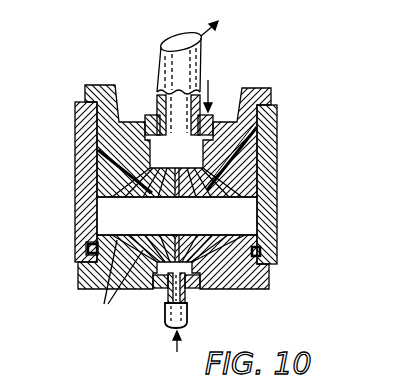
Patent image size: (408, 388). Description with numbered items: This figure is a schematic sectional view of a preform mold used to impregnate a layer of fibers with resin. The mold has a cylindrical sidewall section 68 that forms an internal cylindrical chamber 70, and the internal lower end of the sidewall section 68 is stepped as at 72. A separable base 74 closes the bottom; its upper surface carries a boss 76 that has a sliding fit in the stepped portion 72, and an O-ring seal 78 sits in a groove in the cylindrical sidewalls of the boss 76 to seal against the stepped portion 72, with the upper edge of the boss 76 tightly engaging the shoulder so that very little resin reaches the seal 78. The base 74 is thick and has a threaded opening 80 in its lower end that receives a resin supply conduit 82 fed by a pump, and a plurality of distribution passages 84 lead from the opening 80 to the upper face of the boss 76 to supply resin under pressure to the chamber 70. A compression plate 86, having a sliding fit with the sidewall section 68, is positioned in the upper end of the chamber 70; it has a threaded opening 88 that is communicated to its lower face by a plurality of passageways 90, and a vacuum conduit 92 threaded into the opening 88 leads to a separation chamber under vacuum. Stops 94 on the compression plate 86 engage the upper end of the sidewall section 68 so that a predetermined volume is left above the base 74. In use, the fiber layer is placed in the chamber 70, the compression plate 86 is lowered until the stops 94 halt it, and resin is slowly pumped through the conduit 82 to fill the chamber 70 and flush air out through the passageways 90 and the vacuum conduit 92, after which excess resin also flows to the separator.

The cylindrical sidewall section 68 is at (78, 165).
The internal cylindrical chamber 70 is at (188, 231).
The stepped portion 72 is at (91, 243).
The separable base 74 is at (78, 274).
The boss 76 is at (88, 248).
The O-ring seal 78 is at (259, 252).
The threaded opening 80 is at (152, 295).
The resin supply conduit 82 is at (162, 306).
The distribution passages 84 is at (104, 304).
The compression plate 86 is at (78, 125).
The threaded opening 88 is at (152, 117).
The passageways 90 is at (98, 150).
The vacuum conduit 92 is at (163, 50).
The stops 94 is at (86, 84).